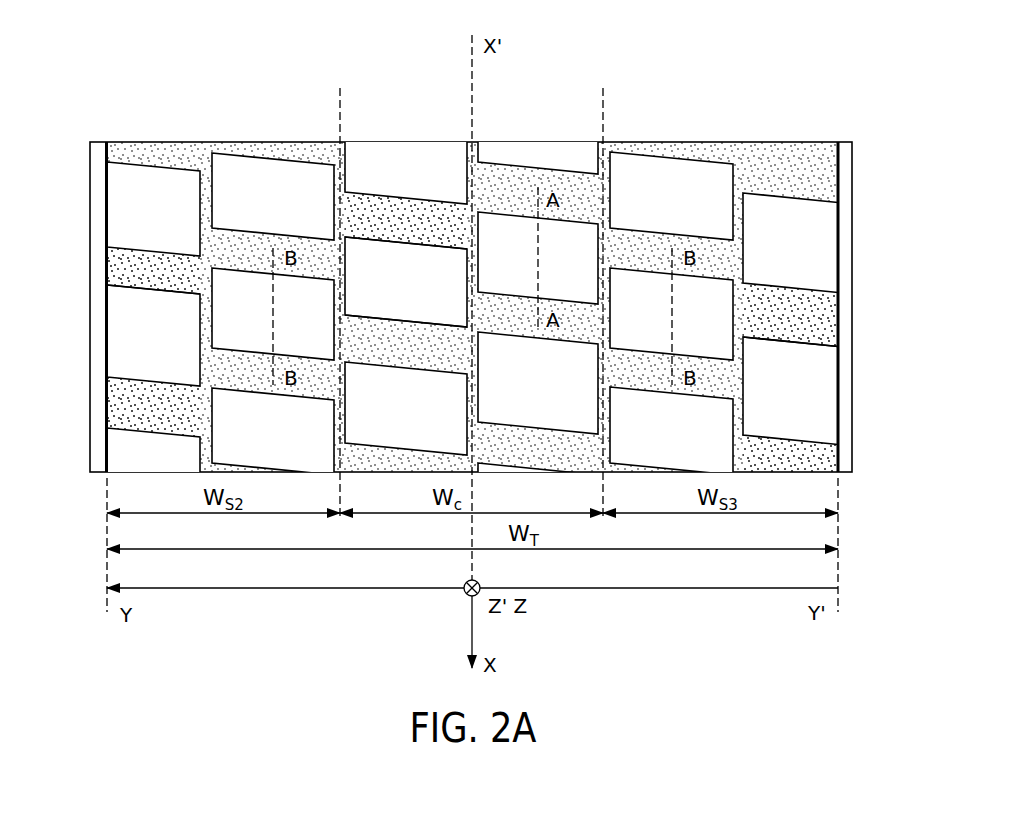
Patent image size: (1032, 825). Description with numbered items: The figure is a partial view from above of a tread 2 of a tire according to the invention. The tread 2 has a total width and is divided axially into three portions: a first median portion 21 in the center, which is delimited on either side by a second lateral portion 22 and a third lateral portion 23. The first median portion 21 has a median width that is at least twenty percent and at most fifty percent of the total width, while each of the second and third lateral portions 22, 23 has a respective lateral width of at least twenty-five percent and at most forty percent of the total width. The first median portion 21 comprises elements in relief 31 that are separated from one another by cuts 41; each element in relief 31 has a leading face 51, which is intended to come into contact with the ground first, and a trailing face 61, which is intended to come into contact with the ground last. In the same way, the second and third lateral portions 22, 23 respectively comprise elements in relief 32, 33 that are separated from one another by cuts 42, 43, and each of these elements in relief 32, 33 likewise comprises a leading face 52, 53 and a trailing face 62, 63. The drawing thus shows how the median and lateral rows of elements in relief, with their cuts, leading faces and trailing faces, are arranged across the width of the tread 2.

The tread 2 is at (140, 118).
The first median portion 21 is at (410, 142).
The second lateral portion 22 is at (275, 142).
The third lateral portion 23 is at (643, 142).
The element in relief 31 is at (395, 270).
The element in relief 32 is at (140, 337).
The element in relief 33 is at (805, 395).
The cut 41 is at (432, 225).
The cut 42 is at (135, 262).
The cut 43 is at (790, 312).
The leading face 51 is at (378, 305).
The leading face 52 is at (124, 380).
The leading face 53 is at (812, 448).
The trailing face 61 is at (425, 250).
The trailing face 62 is at (128, 283).
The trailing face 63 is at (817, 340).